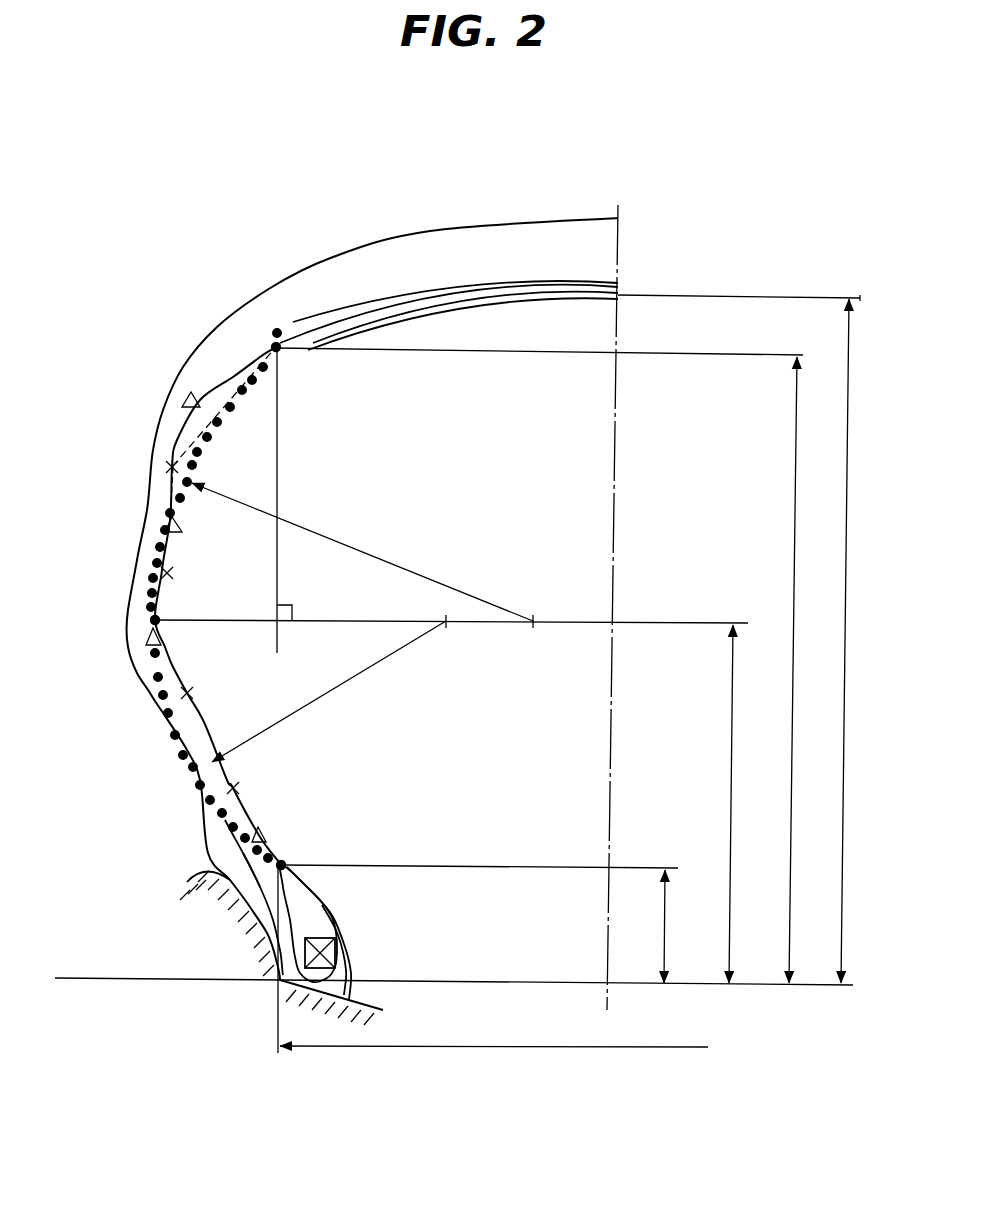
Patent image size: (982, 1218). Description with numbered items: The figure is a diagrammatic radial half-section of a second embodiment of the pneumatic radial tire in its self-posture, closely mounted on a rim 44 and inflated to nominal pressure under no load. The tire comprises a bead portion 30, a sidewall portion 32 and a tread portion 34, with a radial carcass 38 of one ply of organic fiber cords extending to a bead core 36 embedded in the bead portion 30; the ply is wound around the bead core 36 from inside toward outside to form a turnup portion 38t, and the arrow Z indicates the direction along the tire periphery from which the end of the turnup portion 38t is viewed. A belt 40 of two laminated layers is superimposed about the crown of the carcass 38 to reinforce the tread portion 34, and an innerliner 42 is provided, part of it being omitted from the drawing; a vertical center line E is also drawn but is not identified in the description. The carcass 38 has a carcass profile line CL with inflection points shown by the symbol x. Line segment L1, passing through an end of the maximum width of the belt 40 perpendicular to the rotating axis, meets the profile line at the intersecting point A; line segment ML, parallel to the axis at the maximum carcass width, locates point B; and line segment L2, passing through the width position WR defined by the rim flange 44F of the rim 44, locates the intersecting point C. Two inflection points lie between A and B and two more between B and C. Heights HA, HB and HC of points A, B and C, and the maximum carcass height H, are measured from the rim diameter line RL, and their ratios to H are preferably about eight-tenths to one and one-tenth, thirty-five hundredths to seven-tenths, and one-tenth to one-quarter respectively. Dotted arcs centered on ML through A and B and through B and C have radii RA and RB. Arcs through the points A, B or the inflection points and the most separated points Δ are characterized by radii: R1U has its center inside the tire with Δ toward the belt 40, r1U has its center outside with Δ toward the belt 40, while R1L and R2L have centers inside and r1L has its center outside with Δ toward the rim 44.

The tread portion 34 is at (453, 227).
The belt 40 is at (549, 282).
The innerliner 42 is at (518, 308).
The equatorial plane E is at (620, 200).
The sidewall portion 32 is at (131, 673).
The radial carcass 38 is at (231, 768).
The turnup portion 38t is at (256, 890).
The arrow Z is at (245, 850).
The intersecting point A is at (282, 351).
The point B is at (160, 617).
The intersecting point C is at (286, 860).
The radius R1U is at (203, 396).
The radius r1U is at (167, 522).
The radius R1L is at (217, 633).
The radius r1L is at (198, 727).
The radius R2L is at (255, 816).
The radius RA is at (362, 555).
The radius RB is at (329, 688).
The line segment L1 is at (292, 500).
The line segment L2 is at (276, 1029).
The line segment ML is at (672, 621).
The rim diameter line RL is at (454, 960).
The maximum carcass height H is at (739, 639).
The height HA is at (545, 665).
The height HB is at (734, 804).
The height HC is at (482, 924).
The width position WR is at (494, 1053).
The bead portion 30 is at (330, 905).
The bead core 36 is at (341, 932).
The rim flange 44F is at (205, 869).
The rim 44 is at (371, 1004).